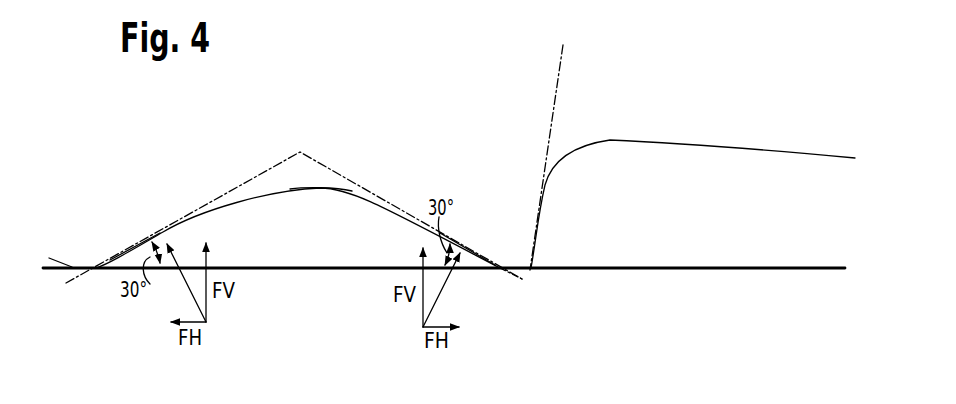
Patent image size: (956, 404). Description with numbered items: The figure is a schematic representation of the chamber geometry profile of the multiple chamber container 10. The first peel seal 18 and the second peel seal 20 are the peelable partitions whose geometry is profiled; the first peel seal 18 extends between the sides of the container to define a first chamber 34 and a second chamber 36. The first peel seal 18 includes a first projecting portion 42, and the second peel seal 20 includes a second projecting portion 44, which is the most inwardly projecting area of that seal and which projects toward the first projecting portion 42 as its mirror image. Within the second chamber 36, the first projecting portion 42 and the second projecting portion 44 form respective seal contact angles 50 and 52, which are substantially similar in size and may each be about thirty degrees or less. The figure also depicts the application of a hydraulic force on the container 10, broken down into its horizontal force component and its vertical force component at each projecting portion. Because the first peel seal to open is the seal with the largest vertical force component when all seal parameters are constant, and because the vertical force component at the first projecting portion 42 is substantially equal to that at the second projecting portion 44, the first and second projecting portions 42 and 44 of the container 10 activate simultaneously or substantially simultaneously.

The container 10 is at (232, 137).
The first peel seal 18 is at (524, 277).
The second peel seal 20 is at (75, 273).
The first chamber 34 is at (628, 158).
The second chamber 36 is at (347, 204).
The first projecting portion 42 is at (518, 253).
The second projecting portion 44 is at (87, 262).
The seal contact angle 50 is at (473, 258).
The seal contact angle 52 is at (135, 257).